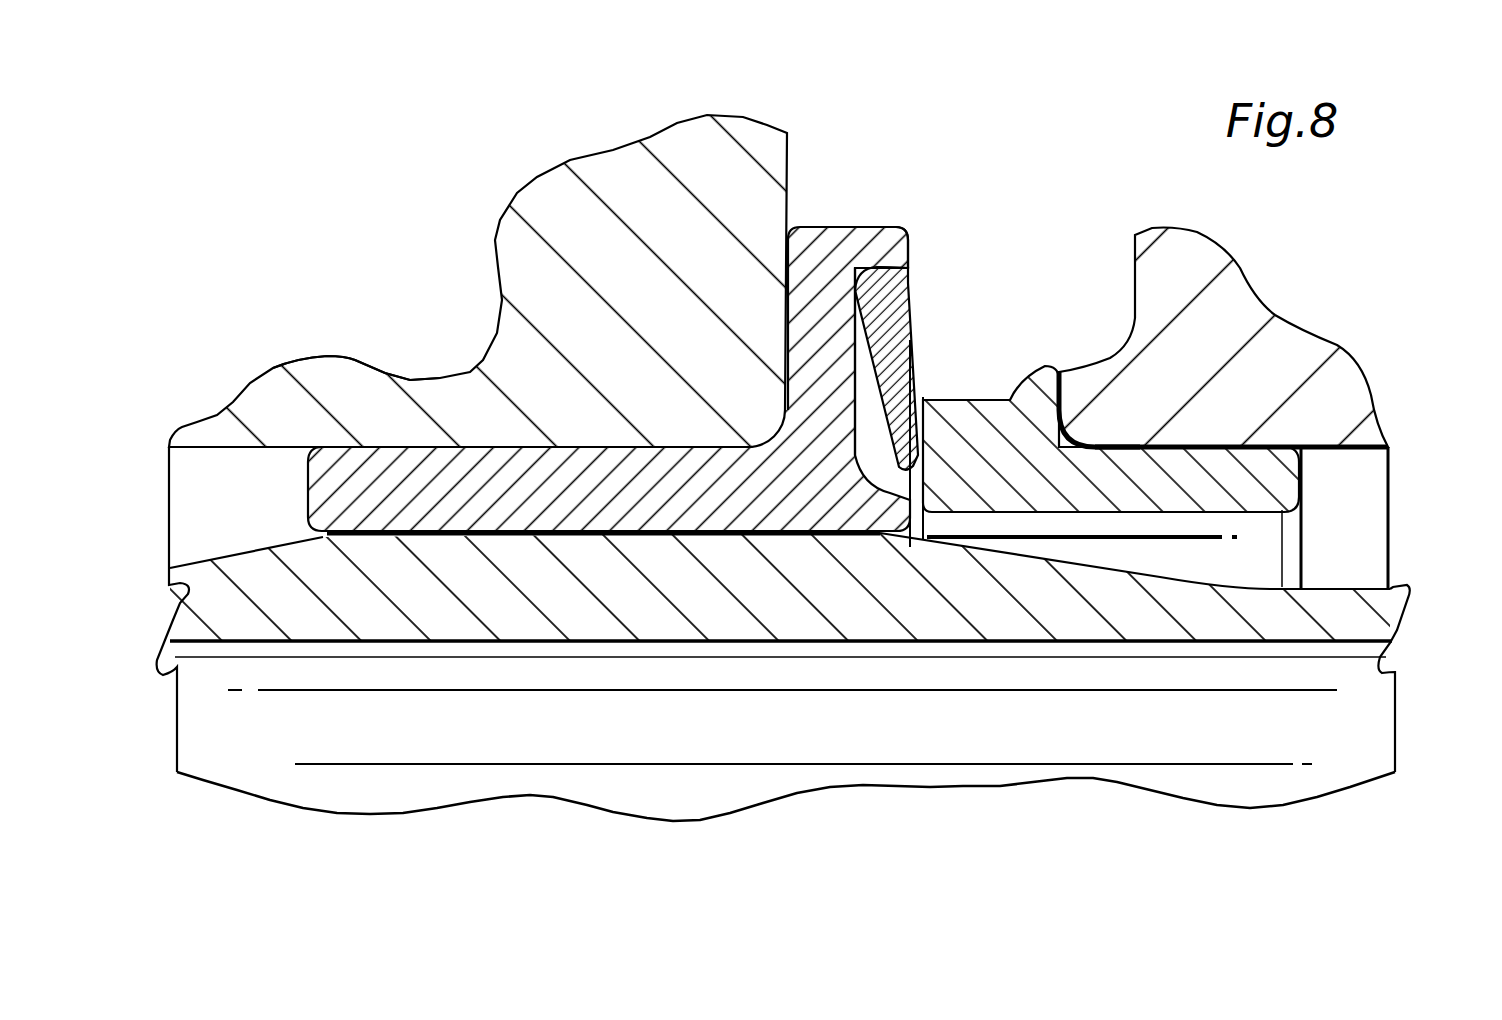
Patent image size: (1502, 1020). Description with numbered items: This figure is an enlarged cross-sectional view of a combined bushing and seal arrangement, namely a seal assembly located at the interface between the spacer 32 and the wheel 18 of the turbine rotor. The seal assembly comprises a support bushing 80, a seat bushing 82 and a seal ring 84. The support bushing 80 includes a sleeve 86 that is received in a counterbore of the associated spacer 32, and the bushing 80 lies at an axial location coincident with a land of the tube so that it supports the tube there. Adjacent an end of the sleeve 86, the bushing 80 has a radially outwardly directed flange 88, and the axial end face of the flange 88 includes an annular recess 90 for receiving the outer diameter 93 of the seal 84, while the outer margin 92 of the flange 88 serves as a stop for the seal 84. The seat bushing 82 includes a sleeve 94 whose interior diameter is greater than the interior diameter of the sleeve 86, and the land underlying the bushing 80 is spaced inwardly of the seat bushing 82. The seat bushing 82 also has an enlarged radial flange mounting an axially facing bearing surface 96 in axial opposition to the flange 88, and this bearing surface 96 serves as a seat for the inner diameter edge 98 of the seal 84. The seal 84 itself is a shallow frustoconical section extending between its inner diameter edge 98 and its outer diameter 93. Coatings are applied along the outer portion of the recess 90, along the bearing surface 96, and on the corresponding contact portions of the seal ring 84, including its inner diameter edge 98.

The wheel 18 is at (1280, 367).
The spacer 32 is at (615, 183).
The support bushing 80 is at (408, 374).
The seat bushing 82 is at (1130, 447).
The seal ring 84 is at (880, 333).
The sleeve 86 is at (397, 467).
The flange 88 is at (807, 333).
The annular recess 90 is at (857, 413).
The outer margin 92 is at (890, 248).
The outer diameter 93 is at (900, 247).
The sleeve 94 is at (1240, 479).
The bearing surface 96 is at (923, 395).
The inner diameter edge 98 is at (885, 533).